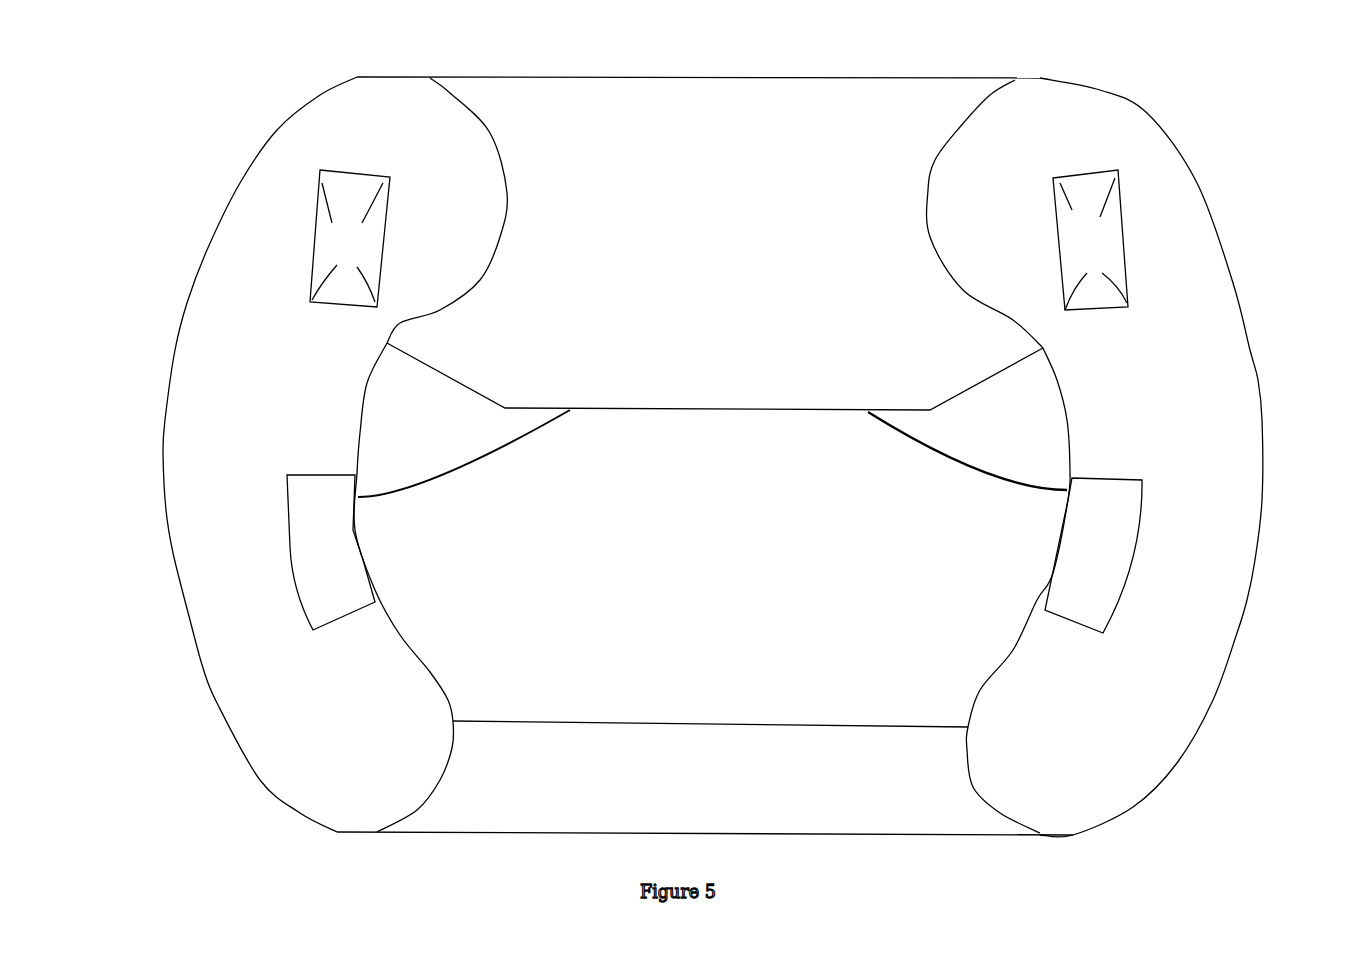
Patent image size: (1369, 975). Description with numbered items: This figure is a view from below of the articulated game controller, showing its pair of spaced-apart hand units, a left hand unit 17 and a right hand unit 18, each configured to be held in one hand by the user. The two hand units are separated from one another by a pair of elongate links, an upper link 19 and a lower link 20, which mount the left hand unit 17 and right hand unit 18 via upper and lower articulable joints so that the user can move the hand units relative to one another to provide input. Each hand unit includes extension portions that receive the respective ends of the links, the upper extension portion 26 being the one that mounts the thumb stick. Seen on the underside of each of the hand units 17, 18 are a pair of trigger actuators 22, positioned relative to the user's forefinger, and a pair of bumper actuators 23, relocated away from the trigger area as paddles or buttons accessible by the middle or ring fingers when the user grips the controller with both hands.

The left hand unit 17 is at (1262, 380).
The right hand unit 18 is at (160, 453).
The upper link 19 is at (682, 238).
The lower link 20 is at (600, 780).
The trigger actuators 22 is at (303, 238).
The bumper actuators 23 is at (293, 570).
The upper extension portion 26 is at (505, 452).